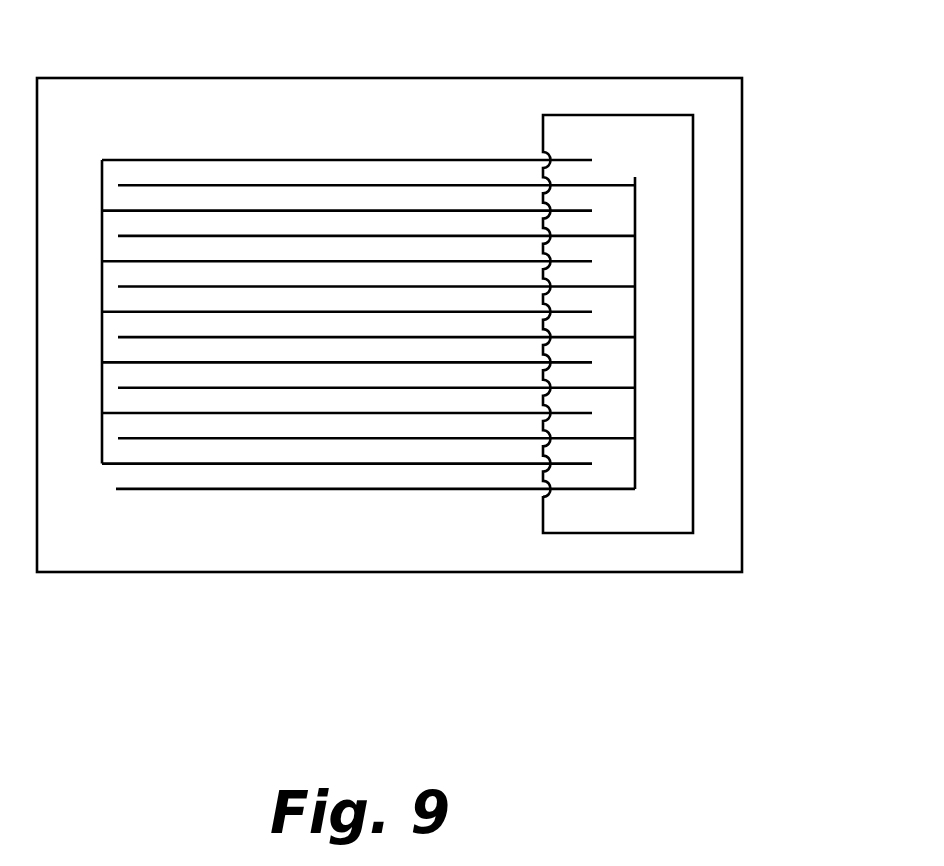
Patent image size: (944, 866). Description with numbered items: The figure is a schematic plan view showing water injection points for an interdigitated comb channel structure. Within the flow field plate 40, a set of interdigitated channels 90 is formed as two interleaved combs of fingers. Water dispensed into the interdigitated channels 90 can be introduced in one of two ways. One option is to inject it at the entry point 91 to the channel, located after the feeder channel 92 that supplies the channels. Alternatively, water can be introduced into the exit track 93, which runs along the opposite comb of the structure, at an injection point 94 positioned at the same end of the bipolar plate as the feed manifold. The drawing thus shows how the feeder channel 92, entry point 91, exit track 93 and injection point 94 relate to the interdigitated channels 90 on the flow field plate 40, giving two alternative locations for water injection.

The flow field plate 40 is at (98, 124).
The interdigitated channels 90 is at (355, 158).
The entry point 91 is at (619, 183).
The feeder channel 92 is at (636, 206).
The exit track 93 is at (587, 157).
The injection point 94 is at (540, 153).